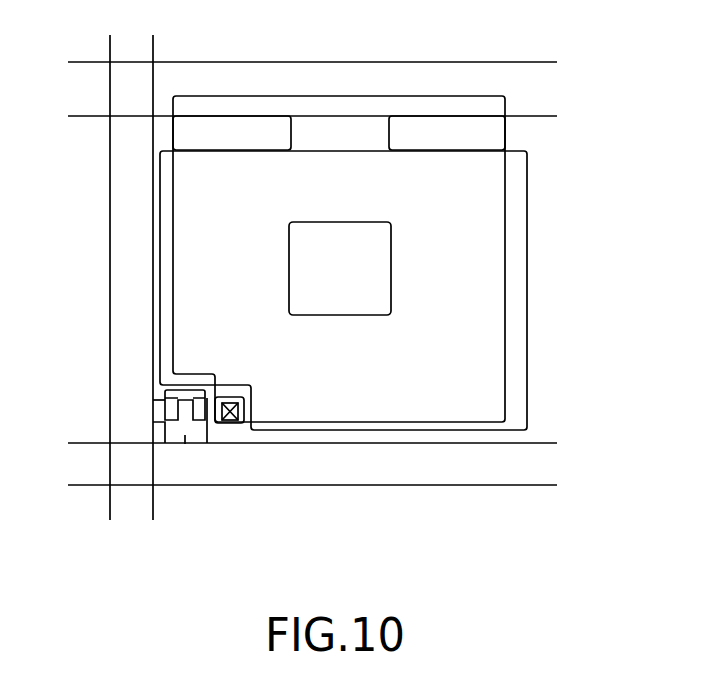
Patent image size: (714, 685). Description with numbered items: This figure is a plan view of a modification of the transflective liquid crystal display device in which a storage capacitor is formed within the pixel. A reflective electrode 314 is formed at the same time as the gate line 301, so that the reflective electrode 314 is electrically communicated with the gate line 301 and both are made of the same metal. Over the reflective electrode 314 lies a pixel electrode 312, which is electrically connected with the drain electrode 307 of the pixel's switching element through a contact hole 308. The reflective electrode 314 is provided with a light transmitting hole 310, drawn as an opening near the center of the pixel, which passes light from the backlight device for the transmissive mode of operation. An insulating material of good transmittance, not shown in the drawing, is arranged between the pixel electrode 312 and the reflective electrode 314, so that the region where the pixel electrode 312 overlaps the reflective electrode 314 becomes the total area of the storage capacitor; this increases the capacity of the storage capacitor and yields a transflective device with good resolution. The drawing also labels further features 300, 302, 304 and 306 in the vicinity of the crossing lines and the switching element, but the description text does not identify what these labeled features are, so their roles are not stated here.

The gate line 300 is at (387, 470).
The gate line 301 is at (463, 70).
The gate electrode 302 is at (185, 437).
The data line 304 is at (125, 220).
The source electrode 306 is at (155, 417).
The drain electrode 307 is at (207, 420).
The contact hole 308 is at (232, 423).
The light transmitting hole 310 is at (380, 267).
The pixel electrode 312 is at (507, 136).
The reflective electrode 314 is at (527, 283).